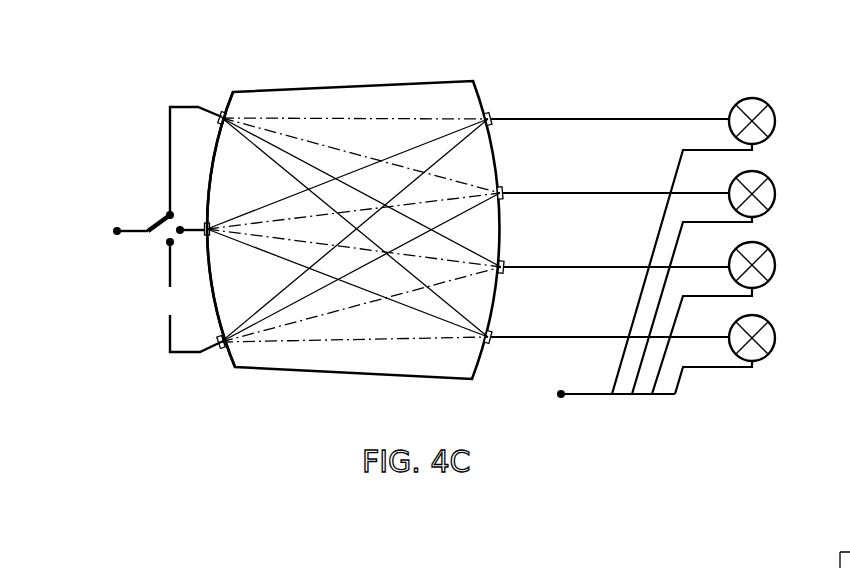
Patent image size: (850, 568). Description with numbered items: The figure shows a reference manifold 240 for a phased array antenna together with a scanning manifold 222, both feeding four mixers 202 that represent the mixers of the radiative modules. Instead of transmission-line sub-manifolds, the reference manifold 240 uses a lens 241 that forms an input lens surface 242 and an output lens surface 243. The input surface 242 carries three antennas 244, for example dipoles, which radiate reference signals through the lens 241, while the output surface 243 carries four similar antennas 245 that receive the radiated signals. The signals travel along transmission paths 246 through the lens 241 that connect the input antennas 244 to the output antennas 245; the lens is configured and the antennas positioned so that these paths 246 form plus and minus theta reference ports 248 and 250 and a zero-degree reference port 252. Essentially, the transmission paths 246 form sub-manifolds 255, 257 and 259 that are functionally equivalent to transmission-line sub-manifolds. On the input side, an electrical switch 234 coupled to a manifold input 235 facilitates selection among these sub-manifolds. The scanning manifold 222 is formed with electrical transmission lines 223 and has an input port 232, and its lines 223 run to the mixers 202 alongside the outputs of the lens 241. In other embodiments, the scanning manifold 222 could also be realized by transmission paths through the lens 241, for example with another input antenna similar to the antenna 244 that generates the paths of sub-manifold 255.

The mixers 202 is at (776, 132).
The scanning manifold 222 is at (630, 406).
The electrical transmission lines 223 is at (677, 390).
The input port 232 is at (558, 394).
The electrical switch 234 is at (157, 222).
The manifold input 235 is at (117, 229).
The reference manifold 240 is at (567, 103).
The lens 241 is at (332, 86).
The input lens surface 242 is at (230, 363).
The output lens surface 243 is at (537, 314).
The input antennas 244 is at (218, 357).
The output antennas 245 is at (505, 268).
The transmission paths 246 is at (355, 117).
The reference port 248 is at (163, 243).
The reference port 250 is at (182, 212).
The 0° reference port 252 is at (195, 236).
The sub-manifold 255 is at (410, 342).
The sub-manifold 257 is at (412, 116).
The sub-manifold 259 is at (347, 292).